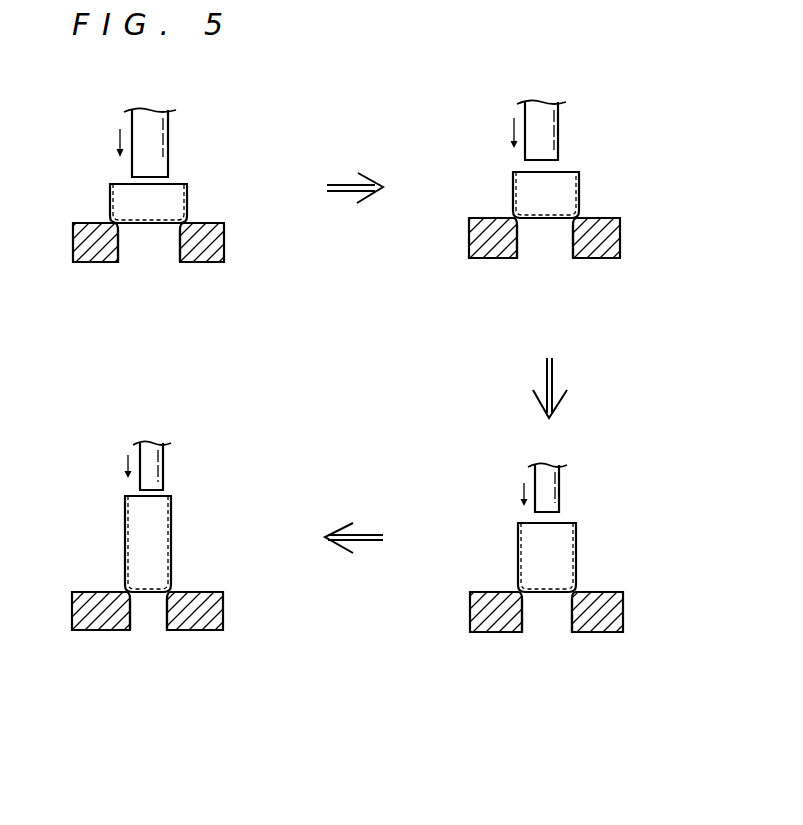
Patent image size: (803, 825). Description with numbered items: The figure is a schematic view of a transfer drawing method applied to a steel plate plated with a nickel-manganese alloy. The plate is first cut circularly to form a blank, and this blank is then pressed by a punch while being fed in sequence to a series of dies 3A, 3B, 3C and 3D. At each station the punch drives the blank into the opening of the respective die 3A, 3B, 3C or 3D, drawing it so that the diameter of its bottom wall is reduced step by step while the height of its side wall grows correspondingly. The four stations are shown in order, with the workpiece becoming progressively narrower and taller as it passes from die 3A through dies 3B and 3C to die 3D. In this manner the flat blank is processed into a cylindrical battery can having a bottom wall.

The die 3A is at (82, 240).
The die 3B is at (620, 243).
The die 3C is at (623, 612).
The die 3D is at (223, 617).